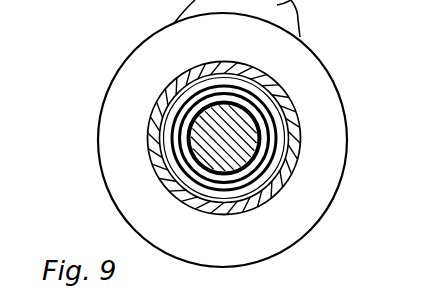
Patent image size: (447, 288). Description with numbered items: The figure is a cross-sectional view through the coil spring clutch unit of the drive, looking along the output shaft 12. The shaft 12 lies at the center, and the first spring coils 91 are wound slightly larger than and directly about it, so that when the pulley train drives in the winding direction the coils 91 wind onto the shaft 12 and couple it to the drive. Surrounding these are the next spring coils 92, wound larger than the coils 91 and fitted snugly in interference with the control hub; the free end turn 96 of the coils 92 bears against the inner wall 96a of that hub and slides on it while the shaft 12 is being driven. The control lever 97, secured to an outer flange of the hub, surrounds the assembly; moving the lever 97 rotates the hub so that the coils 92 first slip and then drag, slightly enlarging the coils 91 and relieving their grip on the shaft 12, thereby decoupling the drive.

The output shaft 12 is at (250, 122).
The spring coils 91 is at (256, 168).
The spring coils 92 is at (245, 150).
The free end turn 96 is at (247, 81).
The inner wall 96a is at (190, 94).
The control lever 97 is at (120, 167).